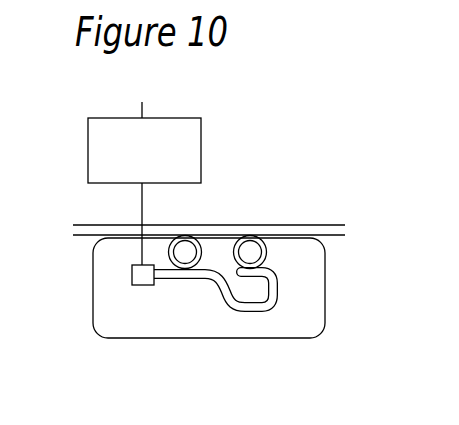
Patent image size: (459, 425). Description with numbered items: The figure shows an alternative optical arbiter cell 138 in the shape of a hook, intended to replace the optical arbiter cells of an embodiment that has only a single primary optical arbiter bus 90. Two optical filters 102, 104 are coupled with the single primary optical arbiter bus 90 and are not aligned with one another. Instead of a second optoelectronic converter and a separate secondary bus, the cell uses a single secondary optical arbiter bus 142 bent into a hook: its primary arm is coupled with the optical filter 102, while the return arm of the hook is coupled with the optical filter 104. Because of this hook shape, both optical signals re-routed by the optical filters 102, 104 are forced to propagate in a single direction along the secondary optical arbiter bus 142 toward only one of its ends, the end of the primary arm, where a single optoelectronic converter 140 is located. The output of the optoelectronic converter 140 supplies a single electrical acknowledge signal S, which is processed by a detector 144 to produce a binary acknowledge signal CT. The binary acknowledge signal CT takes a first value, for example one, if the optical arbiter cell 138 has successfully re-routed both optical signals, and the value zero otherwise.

The primary optical arbiter bus 90 is at (347, 231).
The optical filter 102 is at (211, 236).
The optical filter 104 is at (265, 238).
The optical arbiter cell 138 is at (325, 285).
The optoelectronic converter 140 is at (132, 276).
The secondary optical arbiter bus 142 is at (213, 287).
The detector 144 is at (144, 150).
The electrical acknowledge signal S is at (142, 216).
The binary acknowledge signal CT is at (144, 95).